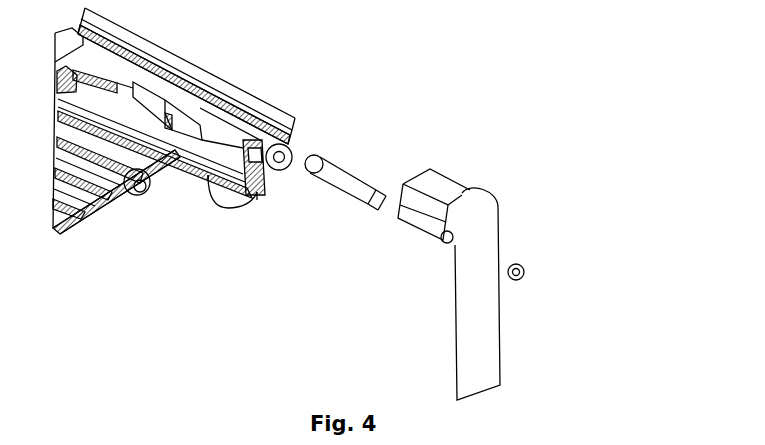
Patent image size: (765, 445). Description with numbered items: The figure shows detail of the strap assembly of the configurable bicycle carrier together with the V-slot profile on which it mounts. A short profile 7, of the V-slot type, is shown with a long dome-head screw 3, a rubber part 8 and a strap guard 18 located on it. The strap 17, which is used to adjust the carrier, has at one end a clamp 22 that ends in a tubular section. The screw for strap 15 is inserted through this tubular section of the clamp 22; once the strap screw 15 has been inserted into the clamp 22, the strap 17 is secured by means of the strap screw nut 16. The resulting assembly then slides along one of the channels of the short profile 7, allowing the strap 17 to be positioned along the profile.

The long dome-head screw 3 is at (137, 197).
The short profile 7 is at (256, 100).
The rubber part 8 is at (227, 206).
The screw for strap 15 is at (363, 175).
The strap screw nut 16 is at (528, 270).
The strap 17 is at (492, 323).
The strap guard 18 is at (173, 193).
The clamp 22 is at (417, 237).